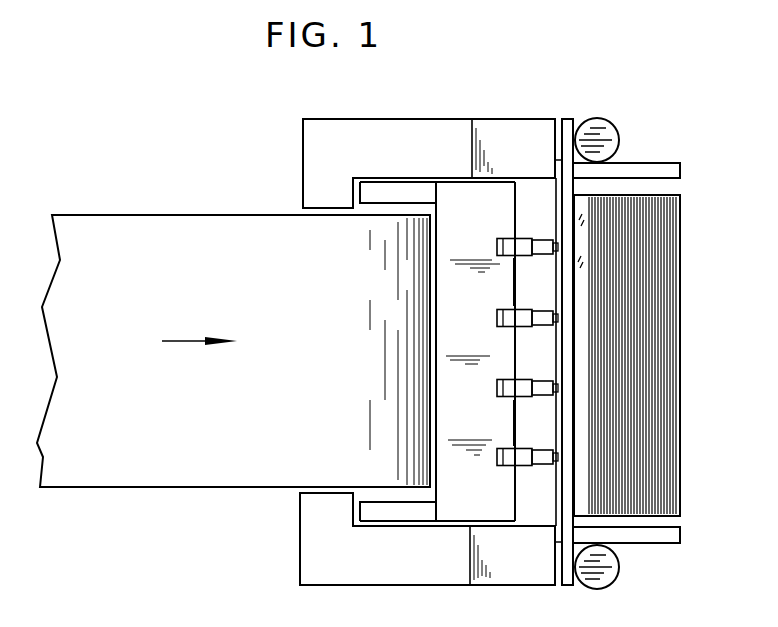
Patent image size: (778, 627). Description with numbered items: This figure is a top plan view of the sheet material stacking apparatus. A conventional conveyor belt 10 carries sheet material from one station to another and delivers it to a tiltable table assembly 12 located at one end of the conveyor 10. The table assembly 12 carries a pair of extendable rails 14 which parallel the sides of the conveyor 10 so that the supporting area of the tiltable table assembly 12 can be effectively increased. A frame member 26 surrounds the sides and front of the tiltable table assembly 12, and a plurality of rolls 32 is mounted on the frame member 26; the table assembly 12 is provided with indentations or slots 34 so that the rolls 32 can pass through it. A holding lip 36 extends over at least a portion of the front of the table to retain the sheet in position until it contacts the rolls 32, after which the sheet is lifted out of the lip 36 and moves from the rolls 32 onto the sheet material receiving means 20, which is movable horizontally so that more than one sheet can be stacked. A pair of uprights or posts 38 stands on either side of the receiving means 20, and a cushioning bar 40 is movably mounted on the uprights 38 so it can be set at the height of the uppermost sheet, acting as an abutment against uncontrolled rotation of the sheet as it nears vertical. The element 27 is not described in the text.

The conveyor belt 10 is at (168, 228).
The tiltable table assembly 12 is at (477, 240).
The extendable rails 14 is at (388, 513).
The sheet material receiving means 20 is at (682, 387).
The frame member 26 is at (545, 218).
The clamp block 27 is at (494, 131).
The rolls 32 is at (548, 384).
The indentations or slots 34 is at (500, 320).
The holding lip 36 is at (511, 288).
The uprights or posts 38 is at (615, 134).
The cushioning bar 40 is at (560, 506).